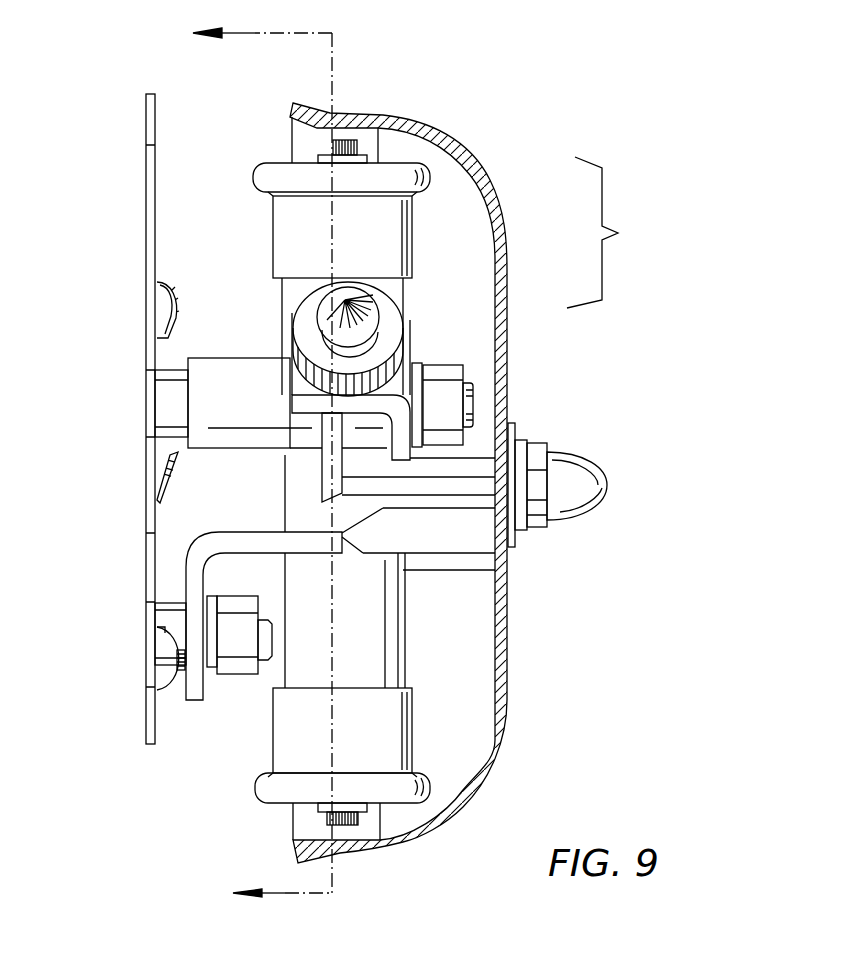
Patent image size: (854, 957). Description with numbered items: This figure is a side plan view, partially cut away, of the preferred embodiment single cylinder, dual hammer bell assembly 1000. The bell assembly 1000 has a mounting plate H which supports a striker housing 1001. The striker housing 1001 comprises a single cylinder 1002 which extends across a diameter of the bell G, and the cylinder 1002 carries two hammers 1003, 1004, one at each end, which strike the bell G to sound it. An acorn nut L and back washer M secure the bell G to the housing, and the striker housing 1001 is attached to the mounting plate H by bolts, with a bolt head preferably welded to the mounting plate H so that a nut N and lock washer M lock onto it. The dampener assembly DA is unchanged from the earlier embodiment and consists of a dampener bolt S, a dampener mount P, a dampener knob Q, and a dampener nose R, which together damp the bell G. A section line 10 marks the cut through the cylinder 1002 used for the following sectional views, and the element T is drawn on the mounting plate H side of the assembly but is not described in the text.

The bell assembly 1000 is at (598, 93).
The section line 10- 10 is at (236, 465).
The striker housing 1001 is at (398, 636).
The cylinder 1002 is at (382, 617).
The hammer 1003 is at (347, 152).
The hammer 1004 is at (350, 826).
The bell G is at (445, 155).
The dampener assembly DA is at (614, 232).
The dampener nose R is at (377, 305).
The dampener knob Q is at (390, 330).
The dampener mount P is at (412, 366).
The back washer M is at (415, 370).
The nut N is at (447, 408).
The dampener bolt S is at (165, 388).
The acorn nut L is at (585, 498).
The mounting plate H is at (146, 526).
The bolt head T is at (163, 660).